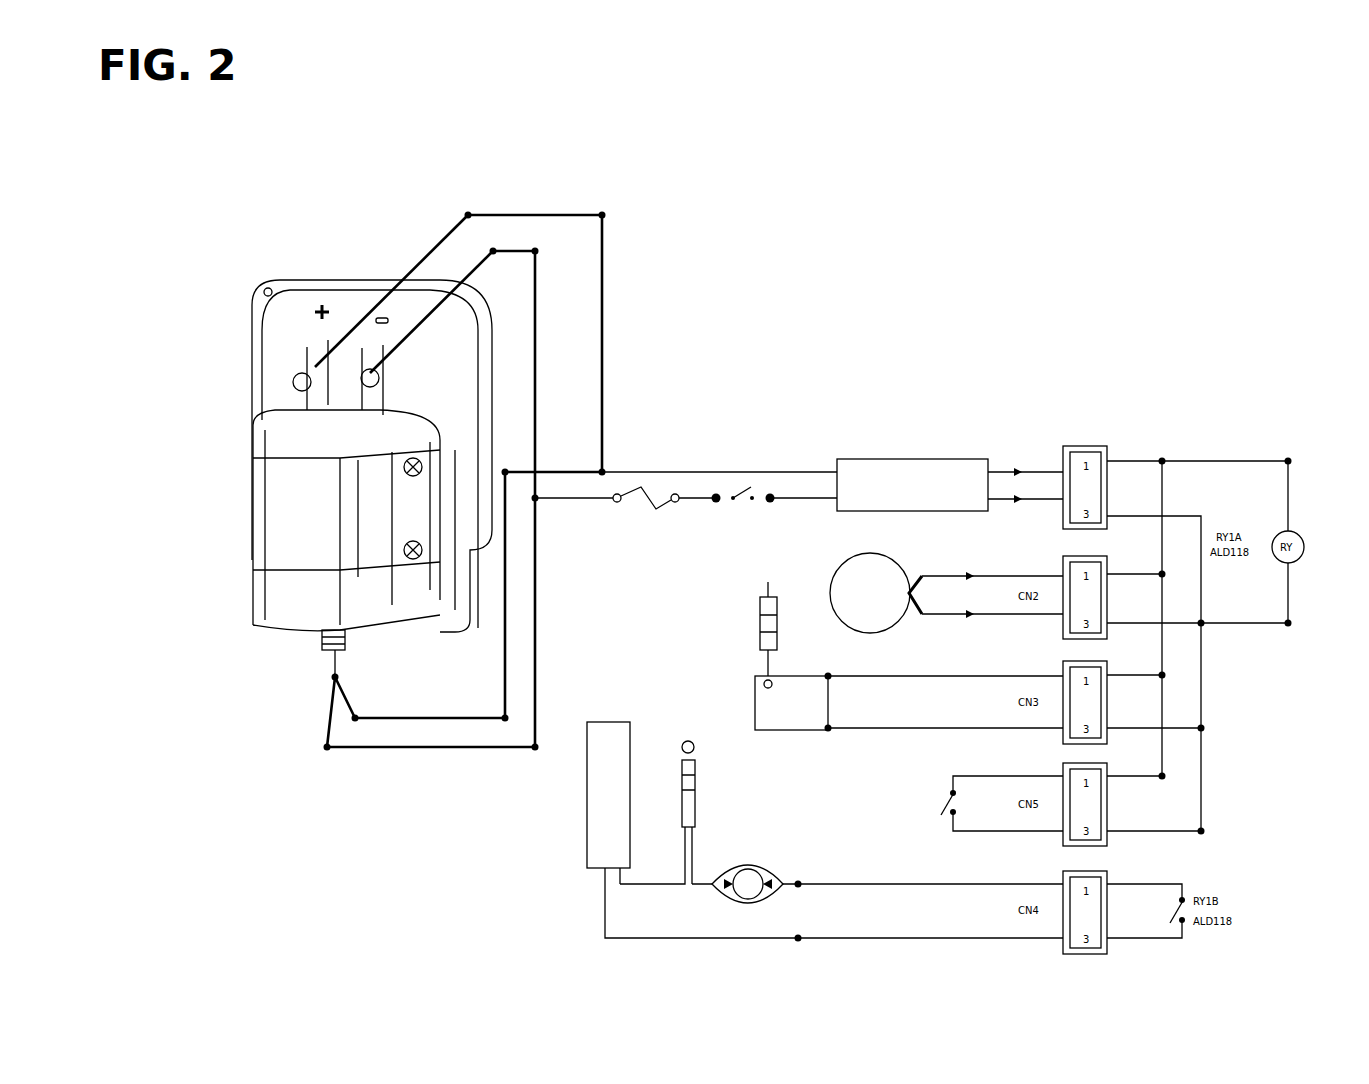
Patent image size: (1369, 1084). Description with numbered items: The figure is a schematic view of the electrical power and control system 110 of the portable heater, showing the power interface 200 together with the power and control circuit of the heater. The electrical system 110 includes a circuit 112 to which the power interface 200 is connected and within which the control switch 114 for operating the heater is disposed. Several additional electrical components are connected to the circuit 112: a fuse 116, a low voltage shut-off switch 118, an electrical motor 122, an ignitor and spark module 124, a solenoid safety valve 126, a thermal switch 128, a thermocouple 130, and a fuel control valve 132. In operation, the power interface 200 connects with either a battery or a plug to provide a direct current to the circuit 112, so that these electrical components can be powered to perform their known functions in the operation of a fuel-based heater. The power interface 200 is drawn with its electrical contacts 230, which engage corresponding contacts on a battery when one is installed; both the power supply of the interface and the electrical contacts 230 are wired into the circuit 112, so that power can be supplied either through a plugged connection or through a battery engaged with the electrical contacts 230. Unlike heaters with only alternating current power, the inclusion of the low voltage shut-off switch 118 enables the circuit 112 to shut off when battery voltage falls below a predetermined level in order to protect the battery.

The electrical power and control system 110 is at (360, 216).
The circuit 112 is at (805, 475).
The control switch 114 is at (742, 490).
The fuse 116 is at (632, 492).
The low voltage shut-off switch 118 is at (968, 467).
The electrical motor 122 is at (832, 592).
The ignitor and spark module 124 is at (787, 676).
The solenoid safety valve 126 is at (953, 812).
The thermal switch 128 is at (760, 862).
The thermocouple 130 is at (688, 743).
The fuel control valve 132 is at (607, 715).
The power interface 200 is at (282, 403).
The electrical contacts 230 is at (296, 373).